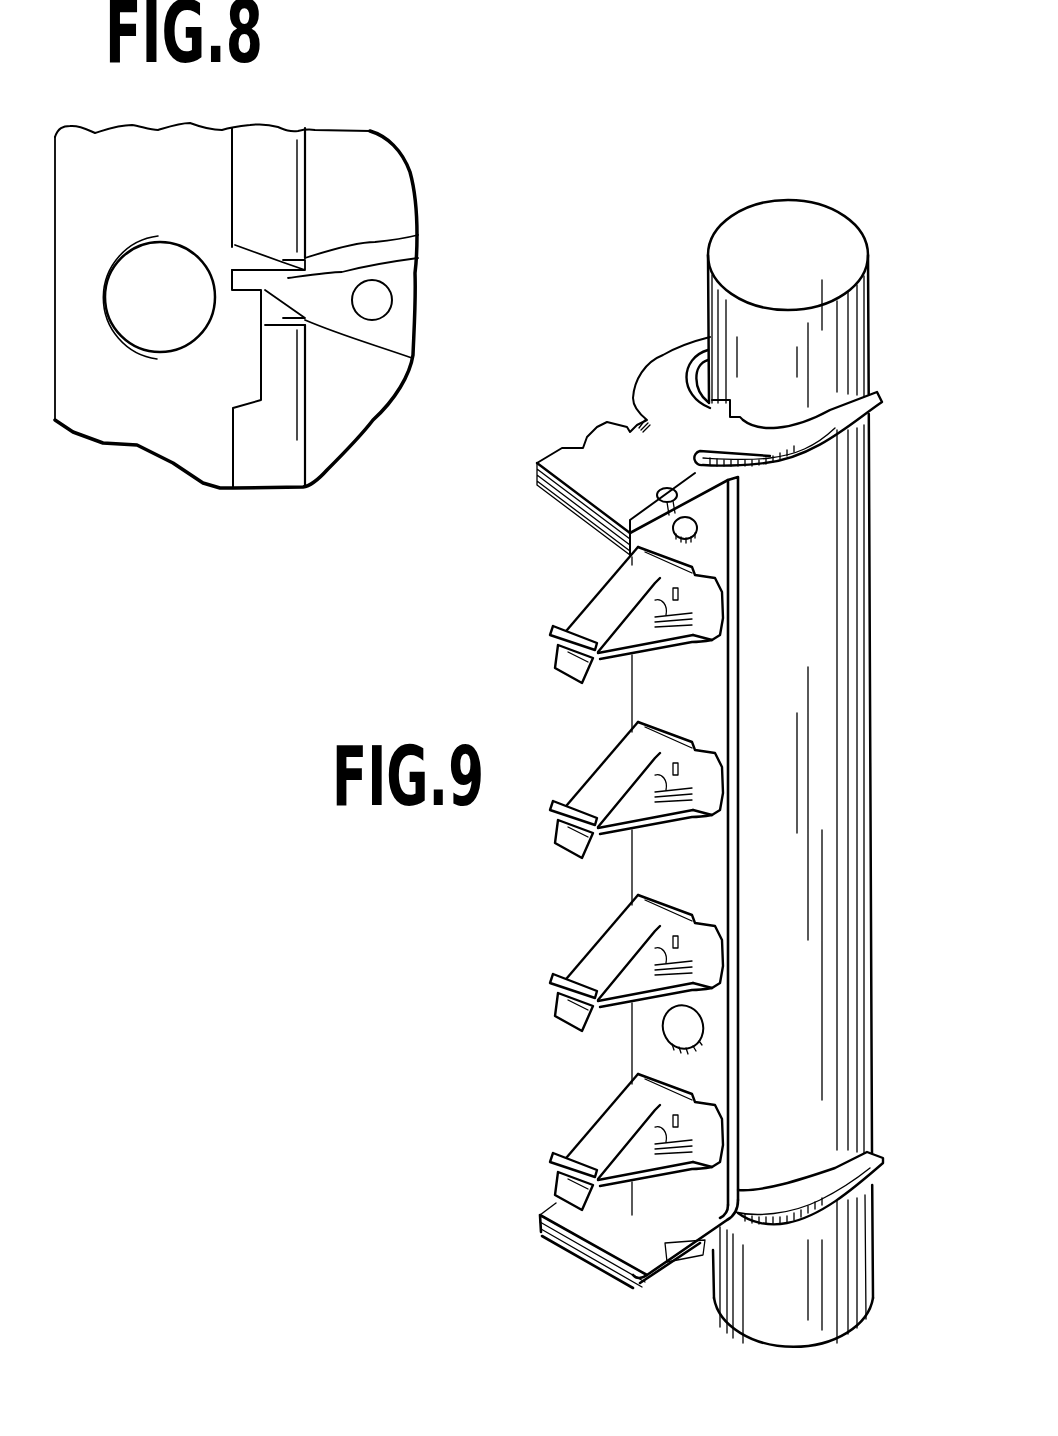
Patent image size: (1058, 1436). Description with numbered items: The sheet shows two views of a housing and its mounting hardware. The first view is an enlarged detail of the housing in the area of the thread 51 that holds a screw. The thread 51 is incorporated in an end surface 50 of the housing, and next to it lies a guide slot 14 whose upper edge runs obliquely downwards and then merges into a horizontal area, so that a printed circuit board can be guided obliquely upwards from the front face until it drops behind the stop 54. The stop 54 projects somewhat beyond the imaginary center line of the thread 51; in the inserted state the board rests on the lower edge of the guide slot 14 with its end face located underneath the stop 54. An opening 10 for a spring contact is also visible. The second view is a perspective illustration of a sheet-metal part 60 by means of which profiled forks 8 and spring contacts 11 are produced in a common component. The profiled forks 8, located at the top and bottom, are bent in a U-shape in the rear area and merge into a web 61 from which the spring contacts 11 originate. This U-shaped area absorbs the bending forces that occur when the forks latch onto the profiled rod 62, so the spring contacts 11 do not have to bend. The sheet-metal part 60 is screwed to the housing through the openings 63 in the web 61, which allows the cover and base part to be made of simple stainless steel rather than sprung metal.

In FIG. 9, the profiled fork 8 is at (683, 375).
In FIG. 8, the opening 10 is at (378, 302).
In FIG. 9, the spring contact 11 is at (617, 778).
In FIG. 8, the guide slot 14 is at (405, 238).
In FIG. 8, the end surface 50 is at (160, 408).
In FIG. 8, the thread 51 is at (107, 273).
In FIG. 8, the stop 54 is at (390, 261).
In FIG. 9, the sheet-metal part 60 is at (575, 583).
In FIG. 9, the web 61 is at (705, 713).
In FIG. 9, the profiled rod 62 is at (828, 345).
In FIG. 9, the opening 63 is at (700, 533).